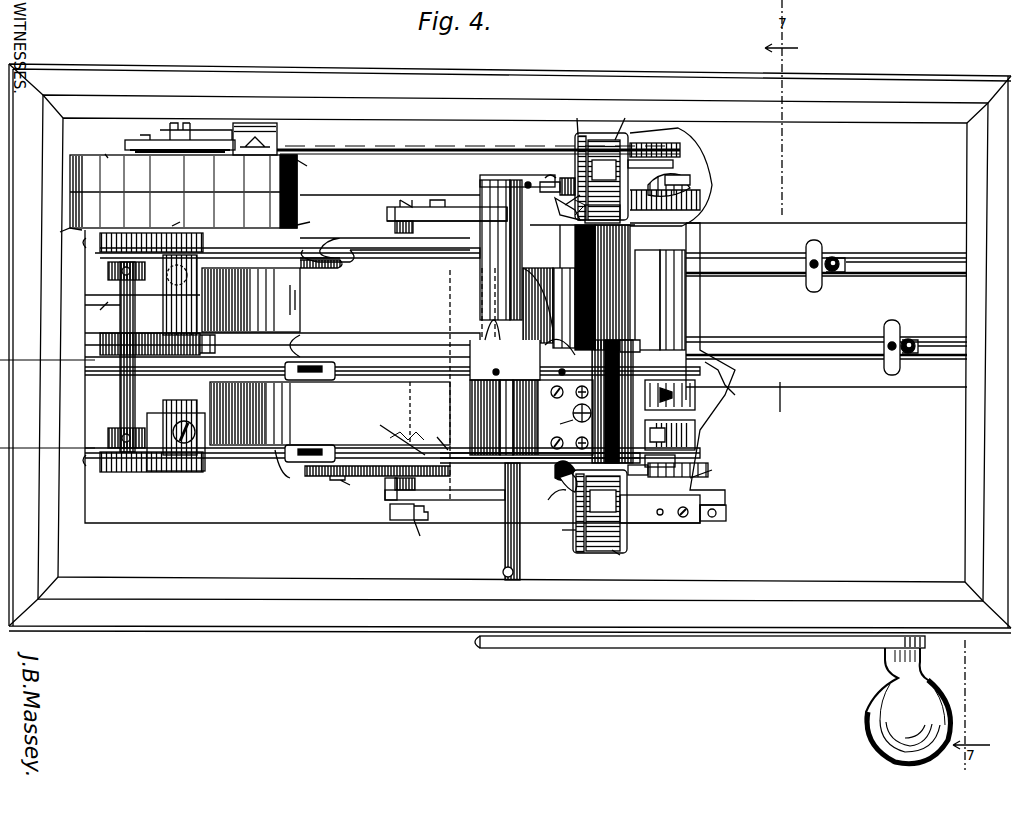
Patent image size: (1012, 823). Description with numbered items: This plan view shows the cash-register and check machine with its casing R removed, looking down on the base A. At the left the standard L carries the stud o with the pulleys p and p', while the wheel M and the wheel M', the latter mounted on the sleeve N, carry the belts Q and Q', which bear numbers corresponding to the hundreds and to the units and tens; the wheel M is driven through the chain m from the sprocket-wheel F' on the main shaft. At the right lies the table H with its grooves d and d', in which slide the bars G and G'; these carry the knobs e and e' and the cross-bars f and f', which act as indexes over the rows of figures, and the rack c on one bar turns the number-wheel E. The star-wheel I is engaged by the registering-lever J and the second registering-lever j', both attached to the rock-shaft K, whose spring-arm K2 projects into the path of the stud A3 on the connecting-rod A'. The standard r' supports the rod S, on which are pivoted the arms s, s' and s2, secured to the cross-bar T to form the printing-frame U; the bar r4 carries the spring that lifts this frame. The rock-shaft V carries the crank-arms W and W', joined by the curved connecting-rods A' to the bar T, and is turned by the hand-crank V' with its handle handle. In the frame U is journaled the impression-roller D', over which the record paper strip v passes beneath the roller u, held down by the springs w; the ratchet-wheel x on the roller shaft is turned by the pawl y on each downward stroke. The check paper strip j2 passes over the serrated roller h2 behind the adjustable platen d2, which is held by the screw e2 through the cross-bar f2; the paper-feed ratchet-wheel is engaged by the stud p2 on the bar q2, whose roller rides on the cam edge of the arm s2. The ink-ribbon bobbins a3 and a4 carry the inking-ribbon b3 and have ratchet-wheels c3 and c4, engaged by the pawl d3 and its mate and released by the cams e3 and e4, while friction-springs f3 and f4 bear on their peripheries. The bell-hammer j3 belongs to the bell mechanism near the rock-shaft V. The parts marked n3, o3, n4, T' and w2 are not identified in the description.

The base A is at (410, 359).
The wheel M is at (183, 182).
The belt Q' is at (107, 147).
The endless belt Q is at (179, 217).
The wheel M' is at (63, 231).
The stud o is at (288, 134).
The standard L is at (255, 128).
The chain m is at (362, 144).
The pulley p' is at (308, 170).
The pulley p is at (309, 217).
The standard r' is at (134, 364).
The arm s is at (287, 246).
The knob e is at (126, 355).
The sleeve N is at (170, 306).
The bar r4 is at (108, 310).
The groove d is at (177, 275).
The rod S is at (140, 395).
The paper strip v is at (326, 377).
The hand-crank V' is at (505, 498).
The arm s' is at (392, 376).
The arm s2 is at (392, 456).
The paper strip j2 is at (330, 413).
The printing-frame U is at (286, 472).
The ratchet-wheel x is at (639, 238).
The stud p2 is at (439, 437).
The bar q2 is at (370, 478).
The crank-arm W' is at (445, 488).
The spring-arm K2 is at (390, 512).
The stud A3 is at (411, 536).
The connecting-rod A' is at (447, 365).
The crank-arm W is at (451, 220).
The pawl y is at (368, 245).
The post n3 is at (590, 242).
The collar o3 is at (542, 175).
The post cap n4 is at (564, 177).
The cam e4 is at (560, 210).
The ink-ribbon bobbin a4 is at (601, 176).
The ratchet-wheel c4 is at (575, 121).
The friction-spring f4 is at (622, 122).
The inking-ribbon b3 is at (602, 215).
The sprocket-wheel F' is at (670, 176).
The bell-hammer j3 is at (692, 183).
The roller u is at (579, 287).
The impression-roller D' is at (660, 300).
The springs w is at (630, 352).
The bracket T' is at (507, 362).
The serrated roller h2 is at (470, 410).
The casing R is at (518, 417).
The cross-bar f2 is at (560, 426).
The cross-bar T is at (540, 444).
The rock-shaft V is at (521, 521).
The cam e3 is at (558, 476).
The pawl d3 is at (552, 502).
The ink-ribbon bobbin a3 is at (600, 511).
The ratchet-wheel c3 is at (564, 532).
The friction-spring f3 is at (620, 560).
The pin w2 is at (638, 472).
The number-wheel E is at (671, 397).
The rack c is at (690, 448).
The registering-lever J is at (676, 467).
The star-wheel I is at (701, 482).
The rock-shaft K is at (660, 509).
The registering-lever j' is at (722, 384).
The table H is at (826, 317).
The bar G' is at (826, 261).
The cross-bar f' is at (814, 267).
The knob e' is at (843, 265).
The groove d' is at (906, 266).
The bar G is at (826, 350).
The cross-bar f is at (892, 347).
The screw e2 is at (909, 346).
The adjustable platen d2 is at (942, 347).
The crank handle is at (908, 706).